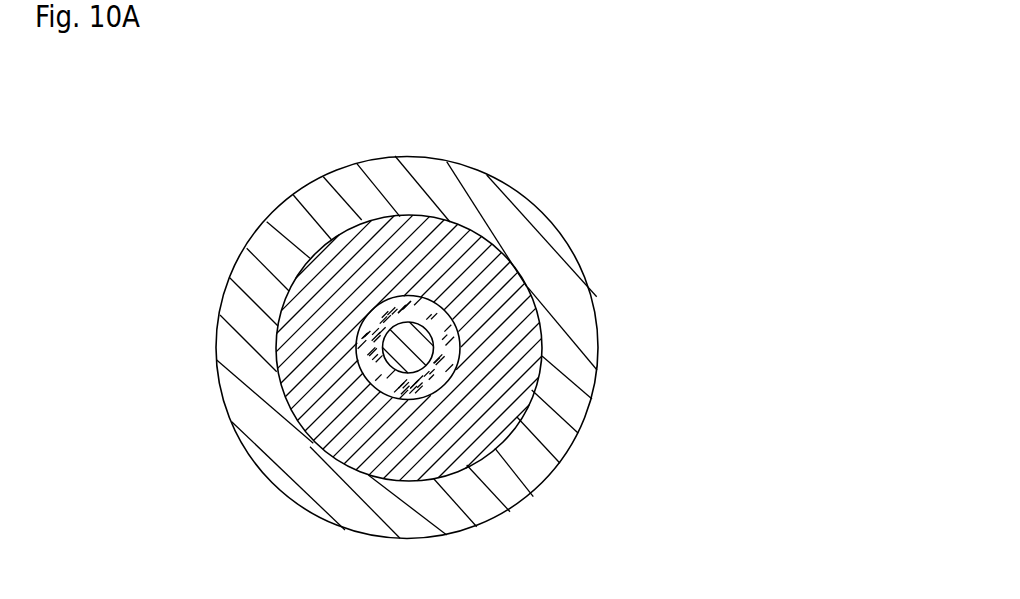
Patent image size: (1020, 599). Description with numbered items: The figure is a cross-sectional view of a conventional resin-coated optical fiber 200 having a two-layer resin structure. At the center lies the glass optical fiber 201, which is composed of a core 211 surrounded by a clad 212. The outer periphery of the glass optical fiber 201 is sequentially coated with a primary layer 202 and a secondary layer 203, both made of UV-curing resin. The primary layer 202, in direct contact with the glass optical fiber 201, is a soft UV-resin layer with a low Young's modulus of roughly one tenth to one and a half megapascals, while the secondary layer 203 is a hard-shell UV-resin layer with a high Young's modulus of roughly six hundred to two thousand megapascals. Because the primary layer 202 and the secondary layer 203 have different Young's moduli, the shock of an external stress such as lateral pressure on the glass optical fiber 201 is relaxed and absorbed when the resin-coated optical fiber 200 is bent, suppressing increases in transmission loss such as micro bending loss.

The resin-coated optical fiber 200 is at (558, 163).
The glass optical fiber 201 is at (683, 223).
The primary layer 202 is at (493, 354).
The secondary layer 203 is at (557, 413).
The core 211 is at (428, 328).
The clad 212 is at (442, 337).